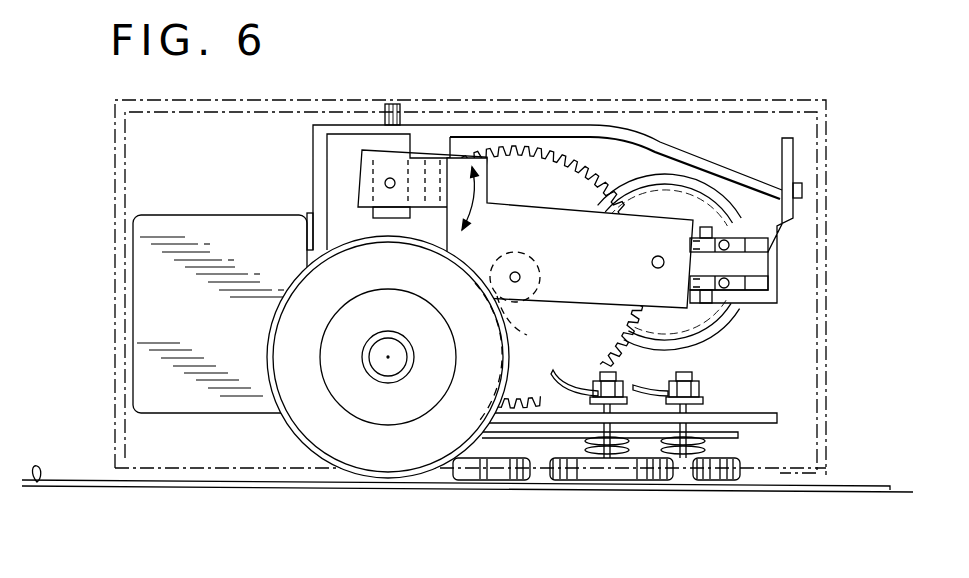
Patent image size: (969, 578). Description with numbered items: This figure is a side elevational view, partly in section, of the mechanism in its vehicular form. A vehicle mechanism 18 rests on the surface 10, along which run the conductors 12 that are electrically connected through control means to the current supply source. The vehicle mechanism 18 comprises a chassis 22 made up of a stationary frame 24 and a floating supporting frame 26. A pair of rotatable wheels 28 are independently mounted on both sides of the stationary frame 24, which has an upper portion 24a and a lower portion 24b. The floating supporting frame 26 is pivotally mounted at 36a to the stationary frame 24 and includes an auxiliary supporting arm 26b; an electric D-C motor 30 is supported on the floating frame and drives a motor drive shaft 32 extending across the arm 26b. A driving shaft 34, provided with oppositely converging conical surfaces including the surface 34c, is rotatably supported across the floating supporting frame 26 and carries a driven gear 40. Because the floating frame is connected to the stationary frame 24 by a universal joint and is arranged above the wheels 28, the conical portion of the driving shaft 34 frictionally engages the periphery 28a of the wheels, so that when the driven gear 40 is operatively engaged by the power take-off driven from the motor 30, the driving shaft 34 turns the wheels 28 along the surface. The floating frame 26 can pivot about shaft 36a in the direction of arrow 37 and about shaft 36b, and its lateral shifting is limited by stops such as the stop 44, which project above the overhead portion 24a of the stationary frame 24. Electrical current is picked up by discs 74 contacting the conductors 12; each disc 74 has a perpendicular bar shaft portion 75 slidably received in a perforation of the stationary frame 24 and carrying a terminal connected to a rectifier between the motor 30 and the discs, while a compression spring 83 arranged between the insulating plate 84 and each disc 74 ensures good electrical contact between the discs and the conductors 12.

The surface 10 is at (38, 482).
The conductors 12 is at (150, 481).
The vehicle mechanism 18 is at (822, 170).
The chassis 22 is at (290, 146).
The stationary frame 24 is at (318, 178).
The upper portion of stationary frame 24a is at (503, 131).
The lower portion of stationary frame 24b is at (770, 413).
The floating supporting frame 26 is at (360, 170).
The auxiliary supporting arm 26b is at (764, 283).
The rotatable wheels 28 is at (337, 477).
The periphery of wheels 28a is at (273, 318).
The electric D-C motor 30 is at (709, 324).
The motor drive shaft 32 is at (652, 262).
The driving shaft 34 is at (548, 258).
The conical surface 34c is at (534, 324).
The pivot shaft 36a is at (397, 122).
The pivot shaft 36b is at (390, 190).
The arrow 37 is at (476, 193).
The driven gear 40 is at (520, 368).
The stop 44 is at (790, 148).
The disc 74 is at (623, 494).
The bar shaft portion 75 is at (693, 405).
The compression spring 83 is at (703, 448).
The insulating plate 84 is at (732, 436).